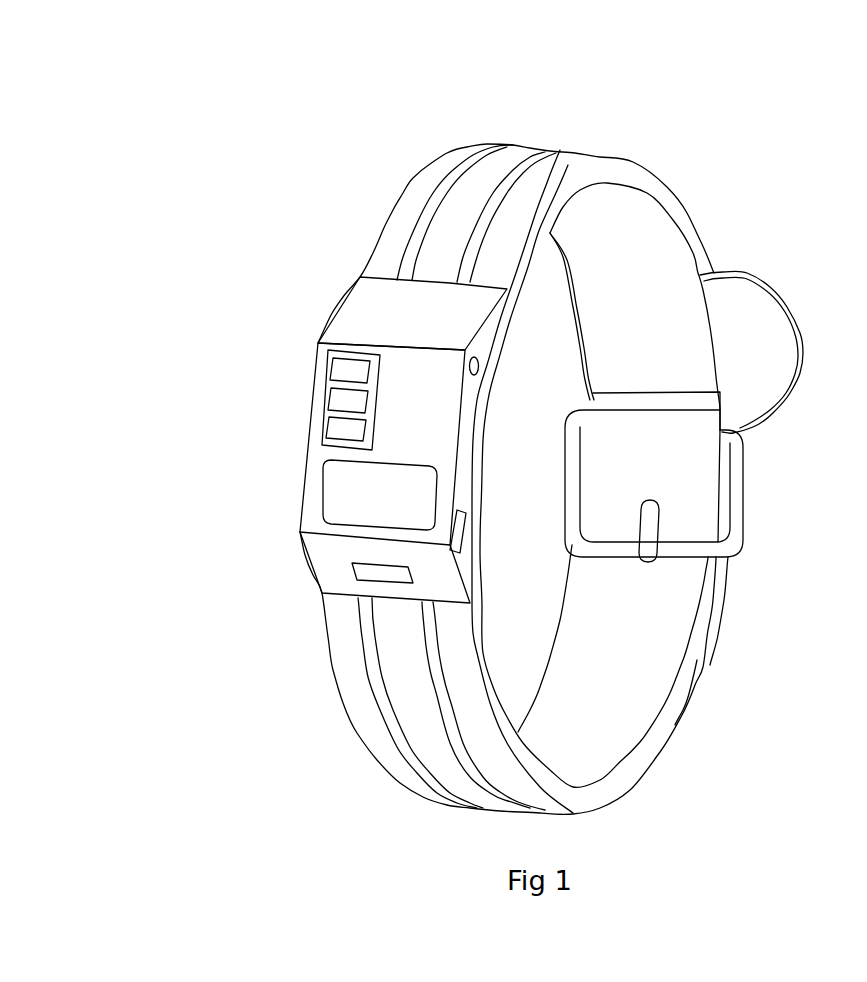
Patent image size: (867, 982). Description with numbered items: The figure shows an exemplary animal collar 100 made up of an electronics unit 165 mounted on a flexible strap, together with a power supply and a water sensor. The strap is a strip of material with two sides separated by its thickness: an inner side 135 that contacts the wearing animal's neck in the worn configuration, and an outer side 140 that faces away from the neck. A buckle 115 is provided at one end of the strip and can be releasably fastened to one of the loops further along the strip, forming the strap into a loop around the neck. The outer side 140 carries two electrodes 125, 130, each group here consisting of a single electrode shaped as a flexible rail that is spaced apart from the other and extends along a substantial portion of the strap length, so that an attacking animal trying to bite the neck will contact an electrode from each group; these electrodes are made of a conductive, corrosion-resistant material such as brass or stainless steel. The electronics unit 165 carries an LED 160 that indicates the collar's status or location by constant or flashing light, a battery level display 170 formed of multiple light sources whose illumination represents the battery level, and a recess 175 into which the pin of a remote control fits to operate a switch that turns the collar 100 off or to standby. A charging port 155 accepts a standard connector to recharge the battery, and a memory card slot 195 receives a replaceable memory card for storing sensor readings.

The collar 100 is at (520, 434).
The buckle 115 is at (745, 530).
The electrode 125 is at (427, 218).
The electrode 130 is at (513, 183).
The inner side 135 is at (597, 700).
The outer side 140 is at (473, 800).
The charging port 155 is at (450, 540).
The LED 160 is at (337, 493).
The electronics unit 165 is at (405, 322).
The battery level display 170 is at (327, 410).
The recess 175 is at (480, 365).
The memory card slot 195 is at (352, 568).